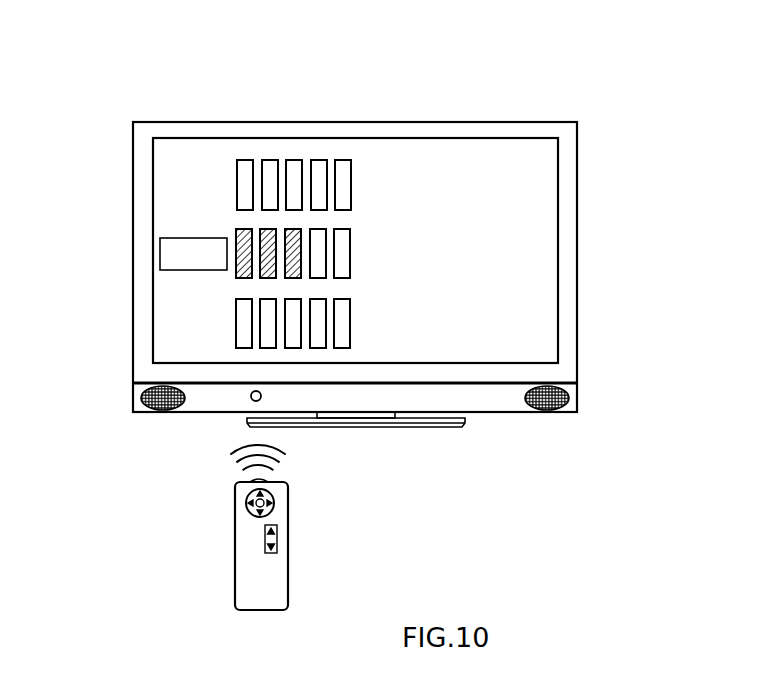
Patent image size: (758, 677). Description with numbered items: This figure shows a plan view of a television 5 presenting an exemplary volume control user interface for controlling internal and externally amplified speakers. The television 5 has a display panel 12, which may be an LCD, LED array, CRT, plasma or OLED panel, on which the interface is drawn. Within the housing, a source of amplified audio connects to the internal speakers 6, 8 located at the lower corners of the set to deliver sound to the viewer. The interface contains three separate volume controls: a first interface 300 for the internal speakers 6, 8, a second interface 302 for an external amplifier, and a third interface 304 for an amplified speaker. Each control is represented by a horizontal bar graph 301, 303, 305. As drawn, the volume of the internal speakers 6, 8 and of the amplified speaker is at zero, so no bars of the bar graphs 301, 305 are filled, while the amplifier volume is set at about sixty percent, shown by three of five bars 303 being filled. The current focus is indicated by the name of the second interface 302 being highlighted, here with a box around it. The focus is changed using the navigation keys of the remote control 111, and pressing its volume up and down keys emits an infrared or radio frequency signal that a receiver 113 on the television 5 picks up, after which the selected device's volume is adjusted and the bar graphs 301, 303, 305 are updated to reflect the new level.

The television 5 is at (686, 94).
The display panel 12 is at (200, 145).
The first interface 300 is at (164, 179).
The second interface 302 is at (160, 250).
The third interface 304 is at (164, 320).
The horizontal bar graph 301 is at (352, 185).
The horizontal bar graph 303 is at (351, 254).
The horizontal bar graph 305 is at (351, 323).
The internal speaker 6 is at (142, 399).
The internal speaker 8 is at (570, 393).
The receiver 113 is at (252, 400).
The remote control 111 is at (288, 498).